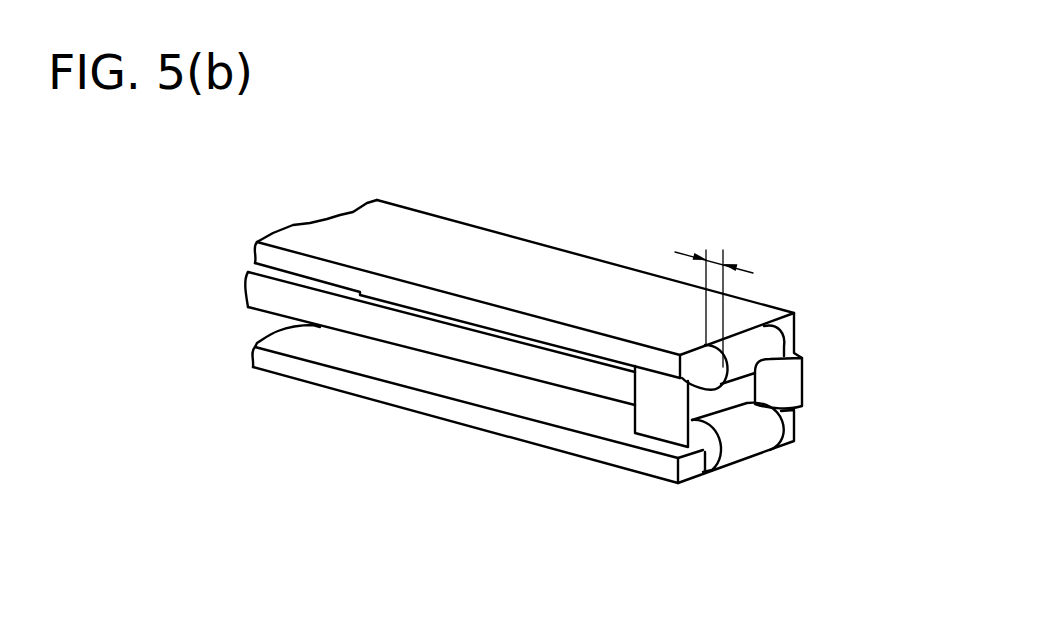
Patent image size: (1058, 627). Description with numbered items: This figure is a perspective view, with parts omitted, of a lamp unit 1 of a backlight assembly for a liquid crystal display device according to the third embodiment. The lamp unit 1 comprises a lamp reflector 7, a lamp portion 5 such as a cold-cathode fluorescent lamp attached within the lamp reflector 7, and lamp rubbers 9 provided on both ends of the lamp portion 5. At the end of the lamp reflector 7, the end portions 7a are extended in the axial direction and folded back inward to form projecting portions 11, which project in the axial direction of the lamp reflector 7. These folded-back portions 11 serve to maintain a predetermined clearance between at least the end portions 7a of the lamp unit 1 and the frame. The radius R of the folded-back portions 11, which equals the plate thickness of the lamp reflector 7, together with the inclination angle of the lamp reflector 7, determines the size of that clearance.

The lamp unit 1 is at (783, 288).
The lamp portion 5 is at (383, 327).
The lamp reflector 7 is at (490, 262).
The end portion of the lamp reflector 7a is at (692, 362).
The lamp rubber 9 is at (668, 413).
The folded-back portion 11 is at (790, 385).
The radius of the folded-back portions R is at (722, 250).